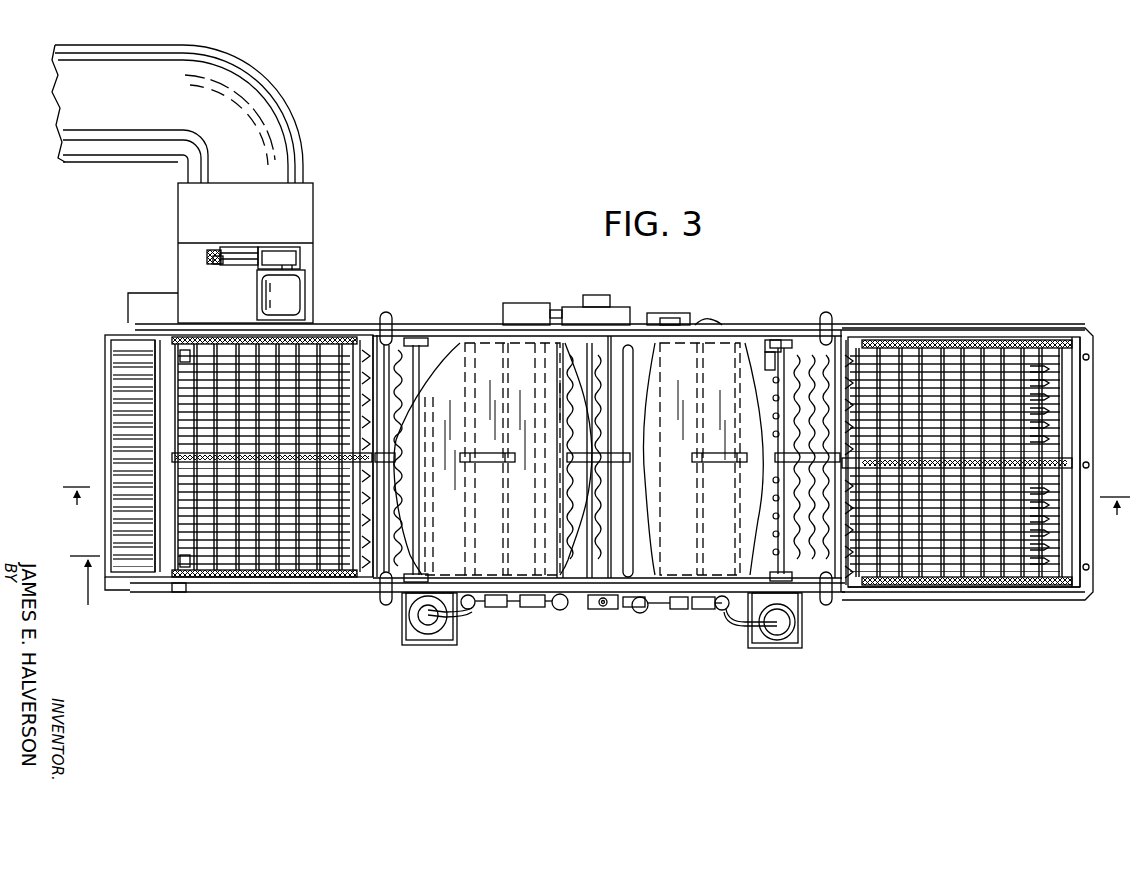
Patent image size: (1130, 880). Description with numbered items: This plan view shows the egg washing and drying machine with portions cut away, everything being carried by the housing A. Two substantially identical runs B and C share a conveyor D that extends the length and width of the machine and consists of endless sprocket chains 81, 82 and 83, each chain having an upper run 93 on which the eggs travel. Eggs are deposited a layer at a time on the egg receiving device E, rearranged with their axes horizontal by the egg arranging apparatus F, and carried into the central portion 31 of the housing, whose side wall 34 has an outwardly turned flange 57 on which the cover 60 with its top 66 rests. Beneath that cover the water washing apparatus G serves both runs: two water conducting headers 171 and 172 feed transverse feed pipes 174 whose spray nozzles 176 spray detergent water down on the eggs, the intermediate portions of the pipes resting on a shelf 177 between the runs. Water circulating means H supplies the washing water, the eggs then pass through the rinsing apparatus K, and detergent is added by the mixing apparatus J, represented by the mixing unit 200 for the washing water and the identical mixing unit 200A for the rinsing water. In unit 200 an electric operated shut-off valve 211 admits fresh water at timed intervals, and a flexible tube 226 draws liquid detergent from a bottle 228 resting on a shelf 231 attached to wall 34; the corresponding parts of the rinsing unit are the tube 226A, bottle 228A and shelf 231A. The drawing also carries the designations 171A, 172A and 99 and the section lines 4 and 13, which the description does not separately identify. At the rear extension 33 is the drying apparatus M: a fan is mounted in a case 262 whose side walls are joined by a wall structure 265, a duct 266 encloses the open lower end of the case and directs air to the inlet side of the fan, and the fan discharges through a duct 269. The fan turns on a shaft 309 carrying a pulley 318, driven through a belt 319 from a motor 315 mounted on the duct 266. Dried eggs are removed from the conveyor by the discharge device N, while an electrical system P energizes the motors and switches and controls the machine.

The duct 269 is at (246, 104).
The case 262 is at (313, 184).
The wall structure 265 is at (300, 224).
The duct 266 is at (196, 271).
The shaft 309 is at (249, 247).
The belt 319 is at (208, 257).
The pulley 318 is at (219, 265).
The motor 315 is at (291, 304).
The drying apparatus M is at (316, 244).
The discharge device N is at (104, 428).
The wall 34 is at (266, 590).
The upper run 93 is at (323, 572).
The frame post 99 is at (333, 560).
The section line 13 is at (210, 547).
The section line 4 is at (596, 512).
The water circulating means H is at (385, 314).
The left hanger rod 171A is at (414, 338).
The rinsing apparatus K is at (447, 328).
The central portion 31 is at (477, 340).
The housing A is at (514, 328).
The electrical system P is at (572, 315).
The water conducting header 171 is at (630, 348).
The top 66 is at (681, 360).
The cover 60 is at (725, 360).
The outwardly turned flanges 57 is at (754, 334).
The water washing apparatus G is at (770, 340).
The shelf 177 is at (646, 461).
The spray nozzles 176 is at (775, 528).
The transverse feed pipes 174 is at (780, 541).
The left divider post 172A is at (563, 590).
The endless sprocket chain 83 is at (1014, 340).
The run C is at (925, 358).
The conveyor D is at (968, 342).
The endless sprocket chain 82 is at (1062, 464).
The egg receiving device E is at (1028, 388).
The egg arranging apparatus F is at (845, 572).
The run B is at (906, 590).
The endless sprocket chain 81 is at (955, 586).
The rear extension 33 is at (1028, 592).
The left drive housing 231A is at (403, 642).
The left pulley 228A is at (428, 622).
The left lever arm 226A is at (434, 620).
The mixing apparatus J is at (470, 613).
The mixing unit 200A is at (500, 610).
The water conducting header 172 is at (637, 612).
The electric operated shut-off valve 211 is at (647, 611).
The mixing unit 200 is at (690, 612).
The flexible tube 226 is at (737, 628).
The bottle 228 is at (777, 635).
The shelf 231 is at (796, 640).